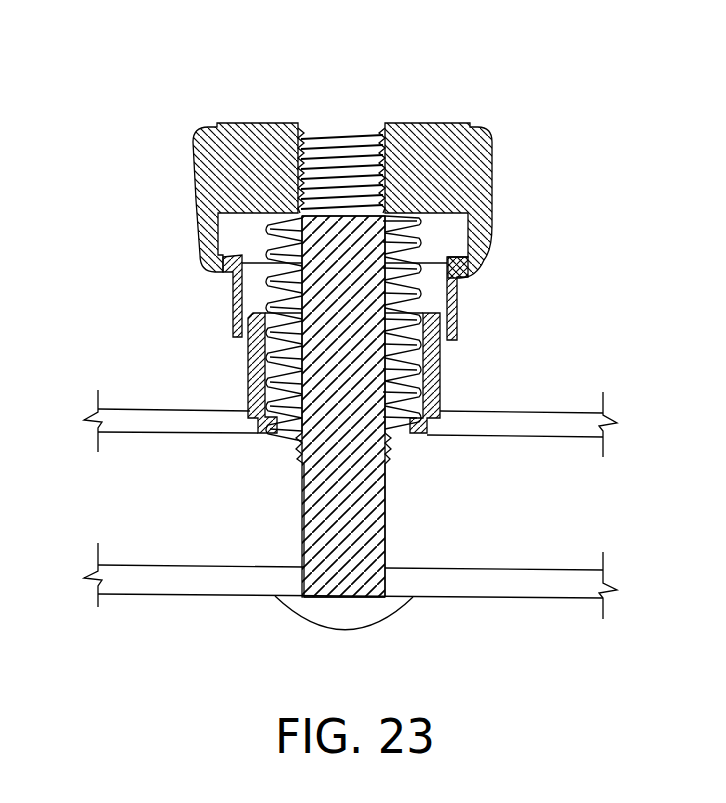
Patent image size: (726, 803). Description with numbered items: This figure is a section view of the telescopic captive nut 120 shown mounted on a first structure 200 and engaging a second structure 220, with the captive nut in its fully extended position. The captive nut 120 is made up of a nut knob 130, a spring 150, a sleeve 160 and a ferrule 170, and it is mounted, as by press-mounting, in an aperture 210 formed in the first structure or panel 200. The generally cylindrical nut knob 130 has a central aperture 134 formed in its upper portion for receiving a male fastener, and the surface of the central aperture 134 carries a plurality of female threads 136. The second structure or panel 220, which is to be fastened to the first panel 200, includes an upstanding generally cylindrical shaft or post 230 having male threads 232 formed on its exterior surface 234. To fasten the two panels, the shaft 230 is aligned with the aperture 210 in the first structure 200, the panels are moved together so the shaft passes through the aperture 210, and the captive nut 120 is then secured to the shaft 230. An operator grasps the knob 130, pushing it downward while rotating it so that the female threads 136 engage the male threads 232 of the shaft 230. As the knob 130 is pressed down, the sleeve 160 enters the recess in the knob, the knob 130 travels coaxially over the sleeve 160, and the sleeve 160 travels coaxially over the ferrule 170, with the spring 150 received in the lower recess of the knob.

The captive nut 120 is at (152, 152).
The nut knob 130 is at (467, 165).
The central aperture 134 is at (355, 128).
The female threads 136 is at (308, 124).
The spring 150 is at (283, 352).
The sleeve 160 is at (457, 311).
The ferrule 170 is at (440, 370).
The first structure 200 is at (548, 427).
The aperture 210 is at (396, 436).
The second structure 220 is at (508, 580).
The shaft 230 is at (367, 540).
The male threads 232 is at (393, 257).
The exterior surface 234 is at (383, 305).